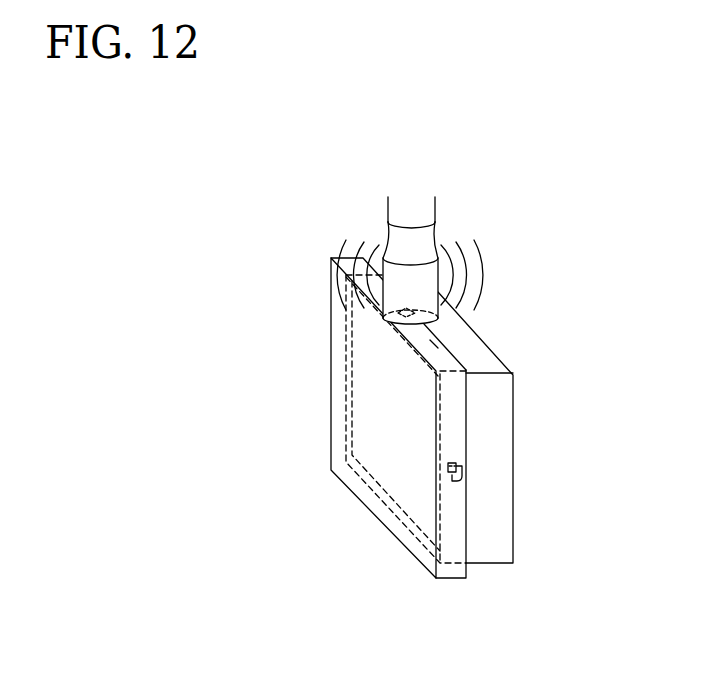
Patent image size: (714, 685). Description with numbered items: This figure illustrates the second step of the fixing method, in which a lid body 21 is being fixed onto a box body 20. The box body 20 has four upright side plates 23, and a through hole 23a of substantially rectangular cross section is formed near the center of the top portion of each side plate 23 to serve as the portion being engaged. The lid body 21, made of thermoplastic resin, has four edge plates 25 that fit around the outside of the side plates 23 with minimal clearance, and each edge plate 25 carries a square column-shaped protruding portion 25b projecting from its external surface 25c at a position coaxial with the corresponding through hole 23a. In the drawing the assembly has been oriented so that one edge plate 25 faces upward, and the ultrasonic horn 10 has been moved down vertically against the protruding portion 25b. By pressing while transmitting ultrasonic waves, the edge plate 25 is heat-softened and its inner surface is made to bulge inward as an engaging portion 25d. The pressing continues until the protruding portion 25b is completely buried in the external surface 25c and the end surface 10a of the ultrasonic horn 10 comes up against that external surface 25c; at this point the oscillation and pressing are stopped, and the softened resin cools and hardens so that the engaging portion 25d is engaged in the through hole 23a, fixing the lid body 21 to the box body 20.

The ultrasonic horn 10 is at (368, 267).
The end surface 10a is at (438, 319).
The box body 20 is at (432, 415).
The lid body 21 is at (328, 380).
The side plate 23 is at (484, 357).
The through hole 23a is at (470, 456).
The edge plate 25 is at (453, 347).
The protruding portion 25b is at (465, 480).
The external surface 25c is at (436, 344).
The engaging portion 25d is at (405, 305).